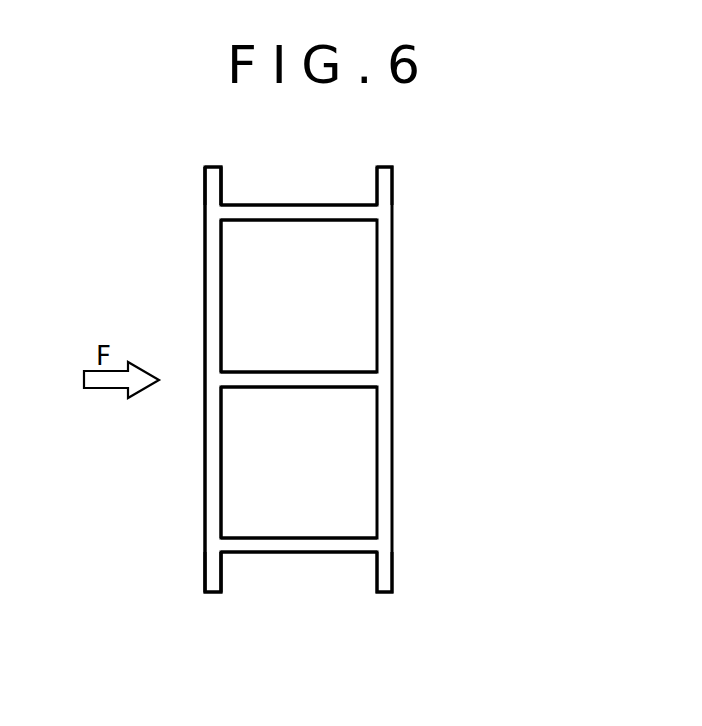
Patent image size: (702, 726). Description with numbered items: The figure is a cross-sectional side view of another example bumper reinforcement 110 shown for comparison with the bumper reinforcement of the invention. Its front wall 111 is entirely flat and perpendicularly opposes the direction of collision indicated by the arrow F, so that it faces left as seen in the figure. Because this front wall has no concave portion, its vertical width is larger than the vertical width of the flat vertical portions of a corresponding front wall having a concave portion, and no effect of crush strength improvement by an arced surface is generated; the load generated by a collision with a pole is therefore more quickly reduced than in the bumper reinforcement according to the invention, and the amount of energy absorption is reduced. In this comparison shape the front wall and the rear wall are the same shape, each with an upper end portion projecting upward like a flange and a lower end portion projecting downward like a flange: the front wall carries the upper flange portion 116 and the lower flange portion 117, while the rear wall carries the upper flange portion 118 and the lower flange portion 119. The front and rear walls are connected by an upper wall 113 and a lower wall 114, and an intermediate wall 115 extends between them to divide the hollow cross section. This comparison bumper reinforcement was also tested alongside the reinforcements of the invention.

The reinforcement member 110 is at (422, 248).
The side wall 111 is at (205, 250).
The upper wall 113 is at (317, 205).
The lower wall 114 is at (300, 553).
The intermediate wall 115 is at (333, 372).
The upper left protruding portion 116 is at (205, 180).
The lower left protruding portion 117 is at (205, 575).
The upper right protruding portion 118 is at (392, 195).
The lower right protruding portion 119 is at (392, 572).